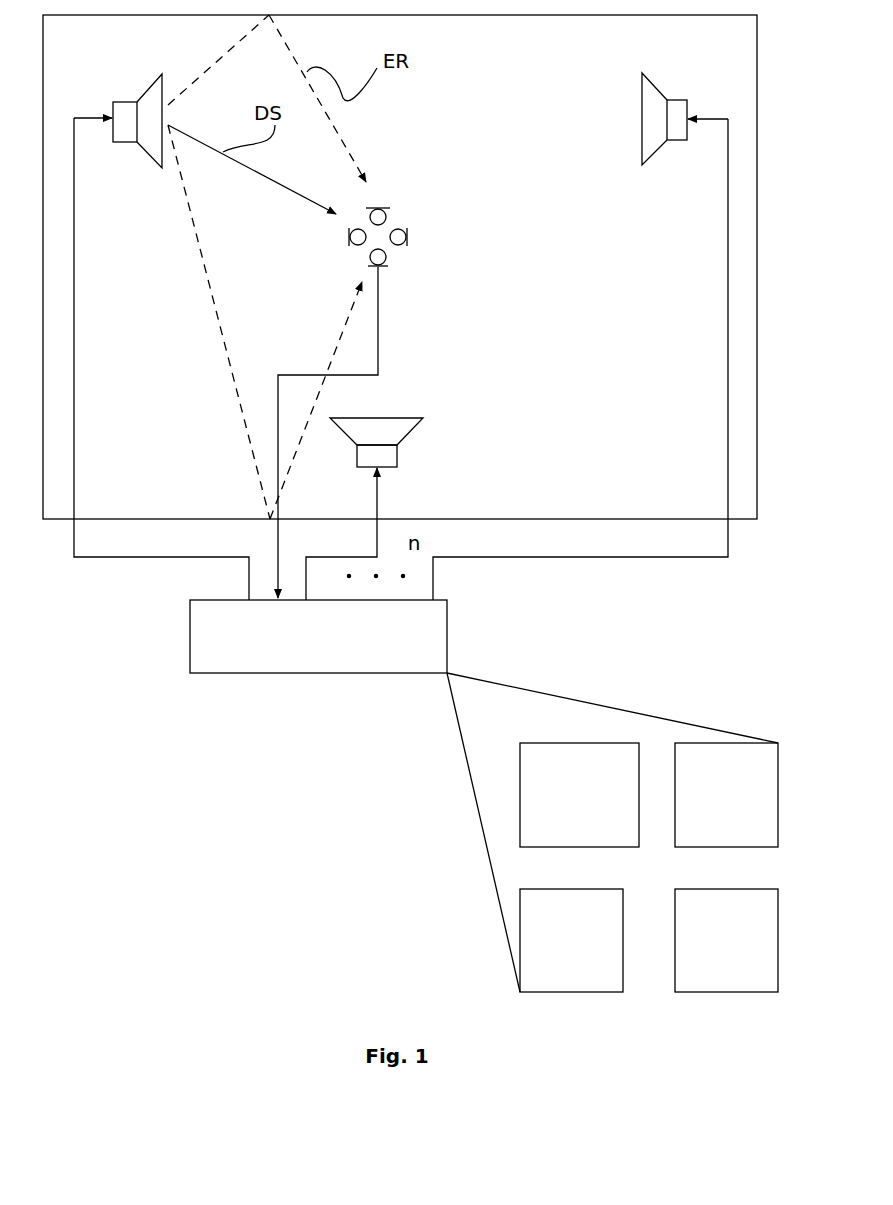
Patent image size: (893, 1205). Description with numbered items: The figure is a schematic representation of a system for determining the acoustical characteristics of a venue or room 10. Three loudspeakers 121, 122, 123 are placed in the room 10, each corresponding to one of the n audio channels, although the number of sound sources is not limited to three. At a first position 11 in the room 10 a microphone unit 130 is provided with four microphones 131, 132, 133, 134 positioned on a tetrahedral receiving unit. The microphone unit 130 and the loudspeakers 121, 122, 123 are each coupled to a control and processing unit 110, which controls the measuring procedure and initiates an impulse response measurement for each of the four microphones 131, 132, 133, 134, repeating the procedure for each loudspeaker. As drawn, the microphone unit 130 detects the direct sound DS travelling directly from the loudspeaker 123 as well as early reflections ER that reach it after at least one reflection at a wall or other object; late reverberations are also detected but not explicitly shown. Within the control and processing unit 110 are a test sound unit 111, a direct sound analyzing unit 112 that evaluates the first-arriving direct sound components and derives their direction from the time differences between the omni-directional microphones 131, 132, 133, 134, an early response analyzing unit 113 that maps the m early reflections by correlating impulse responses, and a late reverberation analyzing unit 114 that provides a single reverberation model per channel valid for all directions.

The room 10 is at (400, 267).
The first position 11 is at (394, 239).
The control and processing unit 110 is at (318, 636).
The test sound unit 111 is at (579, 795).
The direct sound analyzing unit 112 is at (726, 795).
The early response analyzing unit 113 is at (571, 940).
The late reverberation analyzing unit 114 is at (726, 940).
The loudspeaker 121 is at (678, 140).
The loudspeaker 122 is at (412, 435).
The loudspeaker 123 is at (122, 142).
The microphone unit 130 is at (394, 239).
The microphone 131 is at (383, 205).
The microphone 132 is at (407, 243).
The microphone 133 is at (383, 267).
The microphone 134 is at (348, 243).